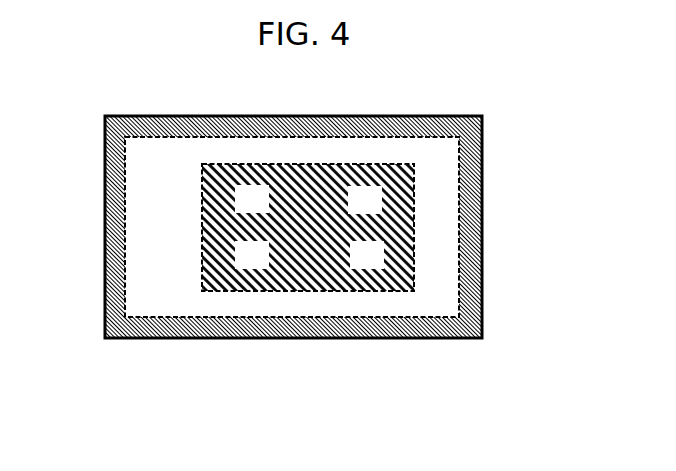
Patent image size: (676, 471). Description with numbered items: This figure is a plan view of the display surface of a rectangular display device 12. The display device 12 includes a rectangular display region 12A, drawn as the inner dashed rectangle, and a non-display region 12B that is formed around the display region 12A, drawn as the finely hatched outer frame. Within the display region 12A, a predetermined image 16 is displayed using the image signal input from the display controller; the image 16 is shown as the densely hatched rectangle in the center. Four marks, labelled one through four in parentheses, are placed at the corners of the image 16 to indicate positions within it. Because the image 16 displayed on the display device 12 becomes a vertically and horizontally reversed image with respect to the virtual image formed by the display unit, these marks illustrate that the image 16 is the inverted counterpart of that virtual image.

The display device 12 is at (113, 258).
The display region 12A is at (348, 301).
The non-display region 12B is at (173, 330).
The image 16 is at (202, 190).